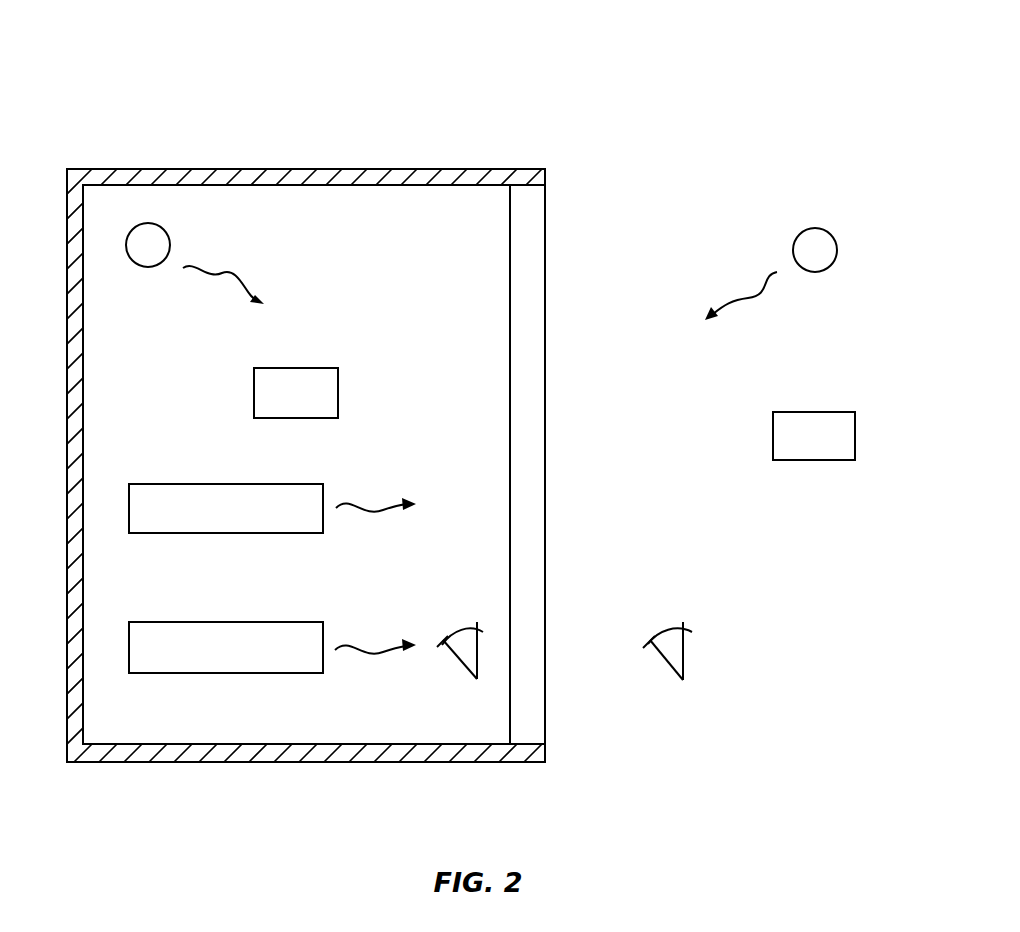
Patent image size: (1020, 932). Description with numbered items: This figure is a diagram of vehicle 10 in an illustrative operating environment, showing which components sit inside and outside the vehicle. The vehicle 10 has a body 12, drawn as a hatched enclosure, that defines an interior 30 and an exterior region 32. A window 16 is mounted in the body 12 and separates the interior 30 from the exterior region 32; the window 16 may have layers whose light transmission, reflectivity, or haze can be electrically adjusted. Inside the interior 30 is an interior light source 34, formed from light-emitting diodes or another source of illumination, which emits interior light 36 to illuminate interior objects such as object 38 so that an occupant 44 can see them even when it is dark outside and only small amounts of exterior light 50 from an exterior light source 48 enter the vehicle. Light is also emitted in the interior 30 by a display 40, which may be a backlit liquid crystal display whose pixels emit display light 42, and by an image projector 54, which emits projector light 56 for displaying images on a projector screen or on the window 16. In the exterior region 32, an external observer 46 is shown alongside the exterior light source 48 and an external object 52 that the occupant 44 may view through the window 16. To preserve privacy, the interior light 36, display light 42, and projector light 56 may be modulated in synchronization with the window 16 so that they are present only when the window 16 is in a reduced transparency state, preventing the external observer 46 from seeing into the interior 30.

The vehicle 10 is at (305, 88).
The body 12 is at (207, 173).
The window 16 is at (530, 710).
The interior 30 is at (428, 205).
The exterior region 32 is at (690, 170).
The interior light source 34 is at (145, 268).
The interior light 36 is at (222, 273).
The object 38 is at (295, 368).
The display 40 is at (225, 533).
The display light 42 is at (383, 511).
The occupant 44 is at (455, 652).
The external observer 46 is at (687, 643).
The exterior light source 48 is at (815, 272).
The exterior light 50 is at (748, 298).
The external object 52 is at (813, 460).
The image projector 54 is at (225, 673).
The projector light 56 is at (383, 652).